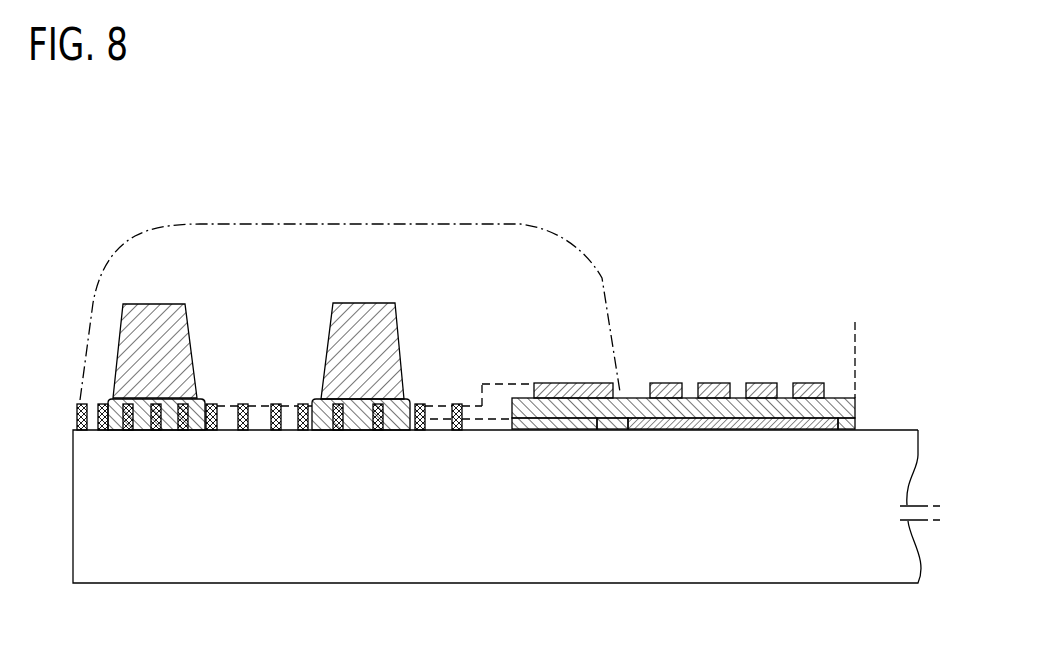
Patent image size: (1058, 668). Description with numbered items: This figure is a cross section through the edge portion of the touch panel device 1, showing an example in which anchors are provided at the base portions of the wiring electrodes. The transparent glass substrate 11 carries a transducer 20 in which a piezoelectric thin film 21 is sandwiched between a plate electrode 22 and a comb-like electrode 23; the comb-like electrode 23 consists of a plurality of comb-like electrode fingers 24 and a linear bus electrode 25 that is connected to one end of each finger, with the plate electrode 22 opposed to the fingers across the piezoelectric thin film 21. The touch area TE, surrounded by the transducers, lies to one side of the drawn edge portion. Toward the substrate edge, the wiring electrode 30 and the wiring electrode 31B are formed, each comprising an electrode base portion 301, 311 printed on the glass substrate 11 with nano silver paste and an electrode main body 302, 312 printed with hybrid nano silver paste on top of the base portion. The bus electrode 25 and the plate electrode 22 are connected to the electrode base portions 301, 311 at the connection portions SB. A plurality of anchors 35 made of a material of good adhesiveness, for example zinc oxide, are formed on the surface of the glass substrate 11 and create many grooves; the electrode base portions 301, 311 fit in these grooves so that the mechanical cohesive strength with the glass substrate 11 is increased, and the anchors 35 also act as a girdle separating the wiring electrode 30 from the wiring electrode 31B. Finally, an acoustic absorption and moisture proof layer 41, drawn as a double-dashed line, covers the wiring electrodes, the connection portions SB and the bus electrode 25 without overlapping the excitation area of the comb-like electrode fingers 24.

The touch panel device 1 is at (476, 179).
The glass substrate 11 is at (323, 584).
The transducer 20 is at (683, 337).
The piezoelectric thin film 21 is at (731, 431).
The plate electrode 22 is at (790, 431).
The comb-like electrode 23 is at (679, 319).
The comb-like electrode finger 24 is at (712, 385).
The bus electrode 25 is at (592, 383).
The wiring electrode 30 is at (321, 341).
The electrode base portion 301 is at (318, 404).
The electrode main body 302 is at (333, 320).
The wiring electrode 31B is at (116, 356).
The electrode base portion 311 is at (110, 400).
The electrode main body 312 is at (118, 345).
The anchor 35 is at (212, 403).
The acoustic absorption and moisture proof layer 41 is at (548, 233).
The connection portion SB is at (510, 383).
The touch area TE is at (855, 337).